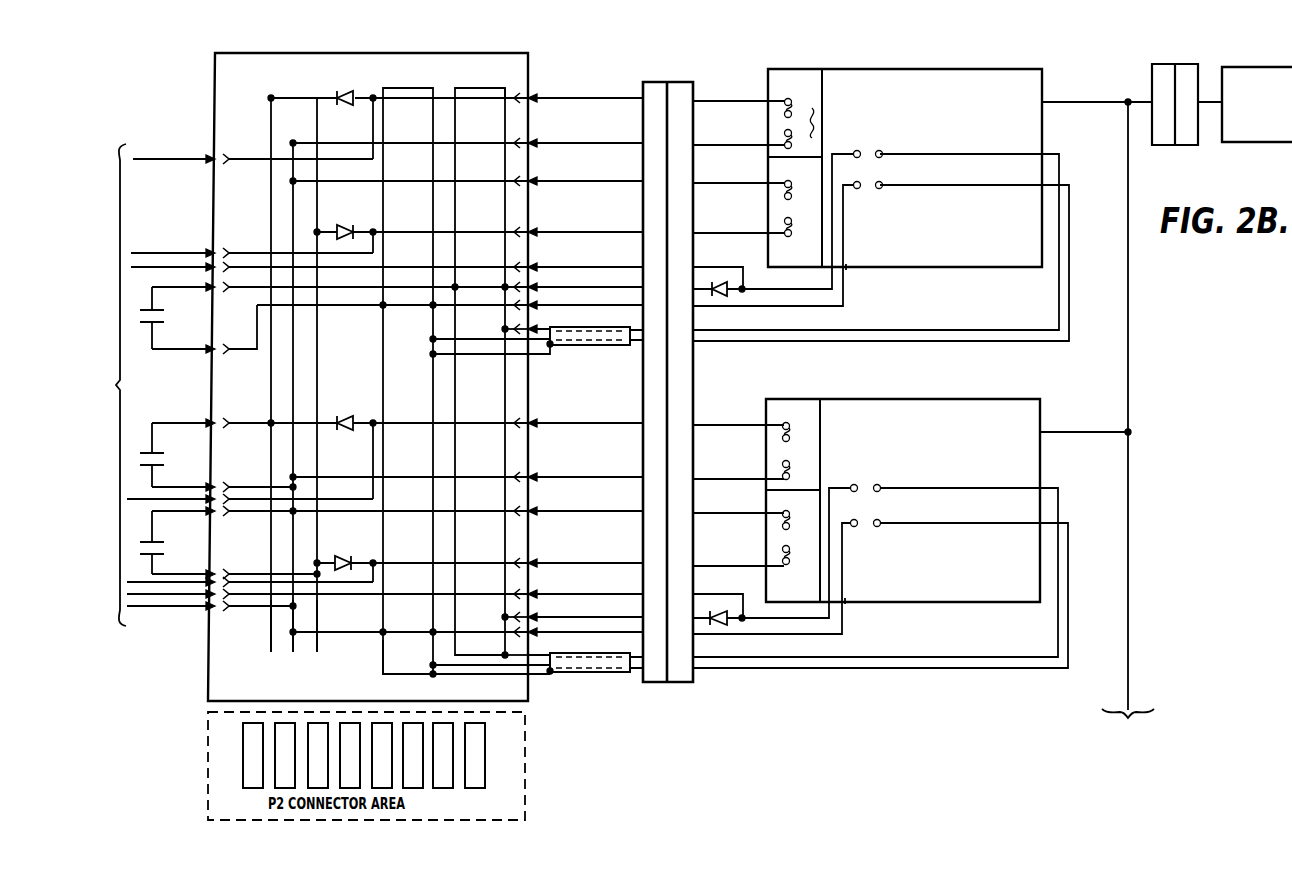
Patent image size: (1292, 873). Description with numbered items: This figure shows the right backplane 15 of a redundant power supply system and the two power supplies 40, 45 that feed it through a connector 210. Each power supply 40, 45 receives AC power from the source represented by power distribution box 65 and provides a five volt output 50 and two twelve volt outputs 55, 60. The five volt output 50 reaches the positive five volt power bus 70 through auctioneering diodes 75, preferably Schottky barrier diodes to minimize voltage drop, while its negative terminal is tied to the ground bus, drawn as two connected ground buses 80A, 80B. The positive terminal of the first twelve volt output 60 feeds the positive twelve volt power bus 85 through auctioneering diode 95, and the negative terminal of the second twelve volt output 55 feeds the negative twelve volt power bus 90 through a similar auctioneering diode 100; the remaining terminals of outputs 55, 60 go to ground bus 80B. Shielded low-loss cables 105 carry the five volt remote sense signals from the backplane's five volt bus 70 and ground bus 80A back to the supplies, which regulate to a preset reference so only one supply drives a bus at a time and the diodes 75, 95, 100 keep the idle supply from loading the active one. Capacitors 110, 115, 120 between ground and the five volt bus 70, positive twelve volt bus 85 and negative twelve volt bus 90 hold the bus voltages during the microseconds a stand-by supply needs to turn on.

The right backplane 15 is at (213, 63).
The positive five volt power bus 70 is at (503, 88).
The positive twelve volt power bus 85 is at (266, 618).
The negative twelve volt power bus 90 is at (313, 622).
The ground bus 80A is at (381, 662).
The ground bus 80B is at (291, 648).
The auctioneering diode 95 is at (349, 104).
The auctioneering diode 100 is at (344, 226).
The shielded low-loss cable 105 is at (582, 347).
The capacitor 110 is at (164, 318).
The capacitor 115 is at (164, 459).
The capacitor 120 is at (160, 546).
The connector 210 is at (686, 684).
The twelve volt output 60 is at (768, 122).
The twelve volt output 55 is at (768, 205).
The auctioneering diode 75 is at (720, 282).
The five volt output 50 is at (822, 266).
The power supply 45 is at (874, 269).
The power supply 40 is at (888, 608).
The power distribution box 65 is at (1276, 143).